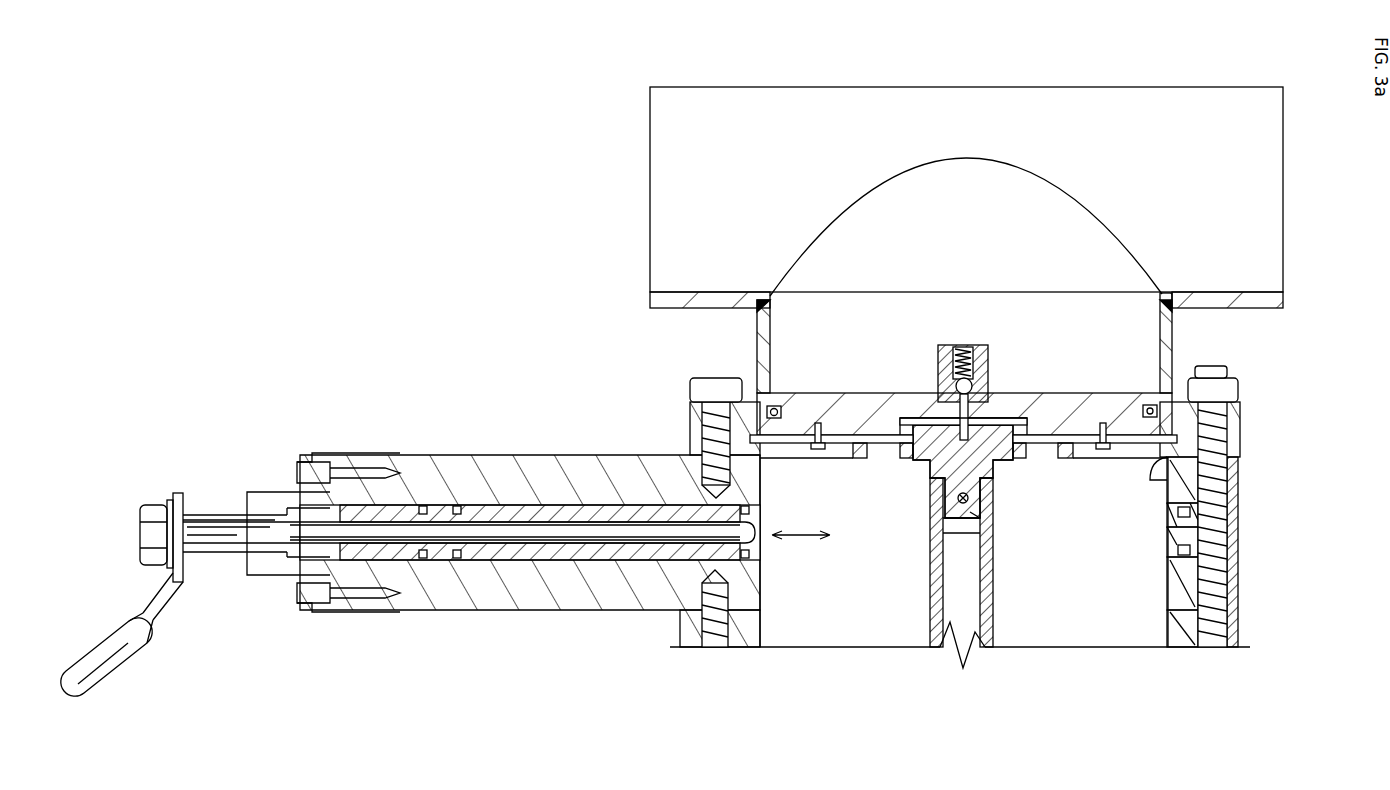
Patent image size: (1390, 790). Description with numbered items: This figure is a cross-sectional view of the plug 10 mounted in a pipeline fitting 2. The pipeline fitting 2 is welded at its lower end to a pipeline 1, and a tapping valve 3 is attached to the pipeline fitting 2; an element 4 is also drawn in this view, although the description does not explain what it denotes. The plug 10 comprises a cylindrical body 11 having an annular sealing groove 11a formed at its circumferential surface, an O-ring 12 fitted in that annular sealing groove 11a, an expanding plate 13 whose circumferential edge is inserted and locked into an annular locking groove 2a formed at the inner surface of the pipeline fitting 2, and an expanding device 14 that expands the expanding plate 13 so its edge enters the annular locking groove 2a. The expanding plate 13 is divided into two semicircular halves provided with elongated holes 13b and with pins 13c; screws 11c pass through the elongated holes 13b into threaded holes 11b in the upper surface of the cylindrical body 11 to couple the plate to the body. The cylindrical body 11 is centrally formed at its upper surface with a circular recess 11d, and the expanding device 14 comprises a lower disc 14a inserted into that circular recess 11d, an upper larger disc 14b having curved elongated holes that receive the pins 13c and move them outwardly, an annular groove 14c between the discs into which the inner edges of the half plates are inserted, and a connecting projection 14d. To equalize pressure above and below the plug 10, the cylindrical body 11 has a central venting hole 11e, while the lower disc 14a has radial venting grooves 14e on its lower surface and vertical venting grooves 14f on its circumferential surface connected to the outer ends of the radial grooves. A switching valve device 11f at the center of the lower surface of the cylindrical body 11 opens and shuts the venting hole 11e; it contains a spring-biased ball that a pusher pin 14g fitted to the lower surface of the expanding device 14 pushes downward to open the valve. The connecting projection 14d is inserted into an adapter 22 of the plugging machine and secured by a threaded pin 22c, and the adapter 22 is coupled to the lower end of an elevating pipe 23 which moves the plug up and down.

The pipeline 1 is at (700, 302).
The pipeline fitting 2 is at (1172, 341).
The annular locking groove 2a is at (1167, 487).
The tapping valve 3 is at (478, 598).
The valve body 4 is at (915, 460).
The plug 10 is at (1093, 345).
The cylindrical body 11 is at (800, 393).
The annular sealing groove 11a is at (985, 360).
The threaded holes 11b is at (927, 395).
The screws 11c is at (945, 345).
The circular recess 11d is at (967, 345).
The venting hole 11e is at (990, 390).
The switching valve device 11f is at (922, 330).
The O-ring 12 is at (766, 413).
The expanding plate 13 is at (835, 452).
The elongated holes 13b is at (1122, 443).
The pins 13c is at (1062, 460).
The expanding device 14 is at (963, 468).
The lower disc 14a is at (935, 420).
The upper disc 14b is at (883, 460).
The annular groove 14c is at (893, 472).
The connecting projection 14d is at (993, 522).
The radial venting grooves 14e is at (1013, 415).
The vertical venting grooves 14f is at (992, 565).
The pusher pin 14g is at (897, 413).
The adapter 22 is at (932, 523).
The threaded pin 22c is at (985, 540).
The elevating pipe 23 is at (935, 630).